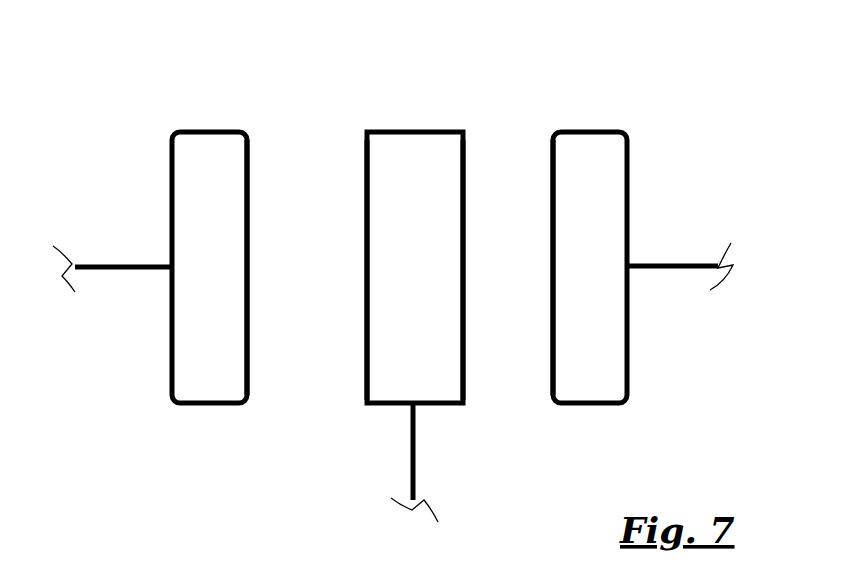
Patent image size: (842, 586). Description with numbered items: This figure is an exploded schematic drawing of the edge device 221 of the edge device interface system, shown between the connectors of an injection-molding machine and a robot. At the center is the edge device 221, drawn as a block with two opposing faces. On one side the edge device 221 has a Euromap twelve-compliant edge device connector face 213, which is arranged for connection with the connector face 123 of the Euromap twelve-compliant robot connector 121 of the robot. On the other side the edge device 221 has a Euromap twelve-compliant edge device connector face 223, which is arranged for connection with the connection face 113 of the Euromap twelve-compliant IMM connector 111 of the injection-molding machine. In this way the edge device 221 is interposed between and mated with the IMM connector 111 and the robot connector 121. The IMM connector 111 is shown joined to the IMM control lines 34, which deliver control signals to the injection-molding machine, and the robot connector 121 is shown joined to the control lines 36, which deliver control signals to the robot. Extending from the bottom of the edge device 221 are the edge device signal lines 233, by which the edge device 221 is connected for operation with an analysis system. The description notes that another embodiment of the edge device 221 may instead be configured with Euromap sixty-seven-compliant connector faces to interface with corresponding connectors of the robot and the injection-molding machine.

The IMM connector 111 is at (200, 165).
The connector face 123 is at (249, 192).
The IMM control lines 34 is at (118, 266).
The edge device 221 is at (413, 172).
The edge device connector face 213 is at (366, 380).
The edge device connector face 223 is at (463, 378).
The edge device signal lines 233 is at (408, 437).
The robot connector 121 is at (610, 172).
The connection face 113 is at (552, 152).
The control lines 36 is at (690, 266).